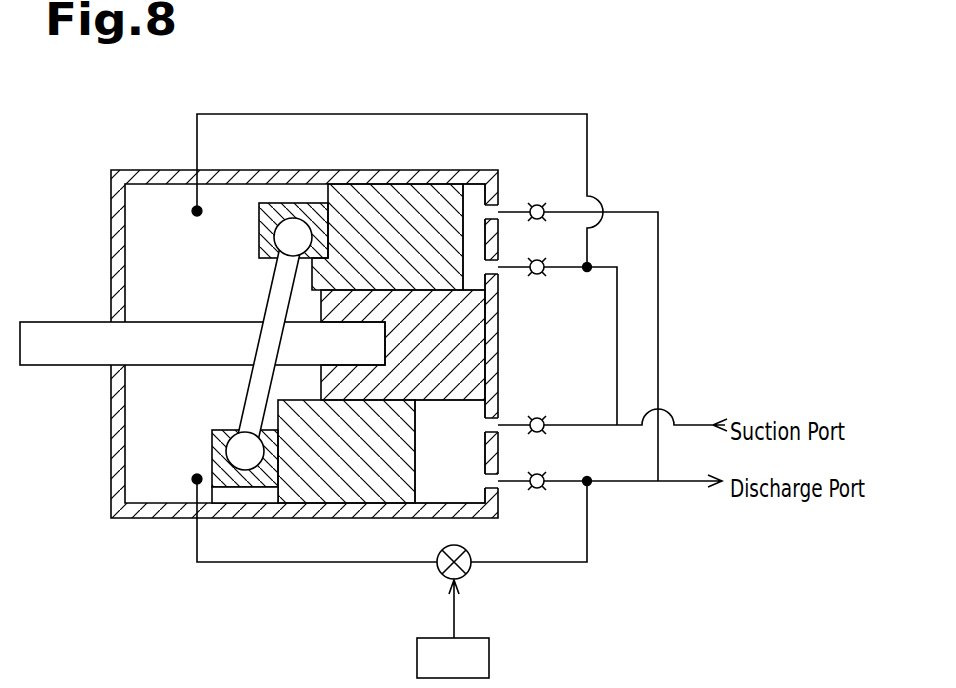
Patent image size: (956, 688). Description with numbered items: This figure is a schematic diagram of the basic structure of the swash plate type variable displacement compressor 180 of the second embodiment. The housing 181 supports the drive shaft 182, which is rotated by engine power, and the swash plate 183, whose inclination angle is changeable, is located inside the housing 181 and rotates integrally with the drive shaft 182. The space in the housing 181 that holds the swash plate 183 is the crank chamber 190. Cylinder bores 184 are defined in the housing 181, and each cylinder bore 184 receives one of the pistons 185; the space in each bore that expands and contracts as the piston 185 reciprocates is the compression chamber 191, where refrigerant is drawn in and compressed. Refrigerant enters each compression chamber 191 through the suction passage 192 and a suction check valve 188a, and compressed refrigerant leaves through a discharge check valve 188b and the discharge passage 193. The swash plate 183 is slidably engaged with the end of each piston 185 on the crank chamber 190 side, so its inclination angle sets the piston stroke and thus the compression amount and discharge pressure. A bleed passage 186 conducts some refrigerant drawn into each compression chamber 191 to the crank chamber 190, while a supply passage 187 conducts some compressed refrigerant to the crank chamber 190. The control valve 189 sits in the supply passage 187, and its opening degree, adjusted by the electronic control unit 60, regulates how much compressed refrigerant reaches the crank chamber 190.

The swash plate type variable displacement compressor 180 is at (157, 90).
The housing 181 is at (111, 223).
The drive shaft 182 is at (58, 366).
The swash plate 183 is at (267, 287).
The cylinder bore 184 is at (416, 180).
The piston 185 is at (338, 177).
The bleed passage 186 is at (383, 114).
The supply passage 187 is at (372, 563).
The suction check valve 188a is at (542, 275).
The discharge check valve 188b is at (537, 205).
The control valve 189 is at (471, 570).
The crank chamber 190 is at (158, 415).
The compression chamber 191 is at (473, 215).
The suction passage 192 is at (616, 349).
The discharge passage 193 is at (659, 341).
The electronic control unit 60 is at (490, 660).